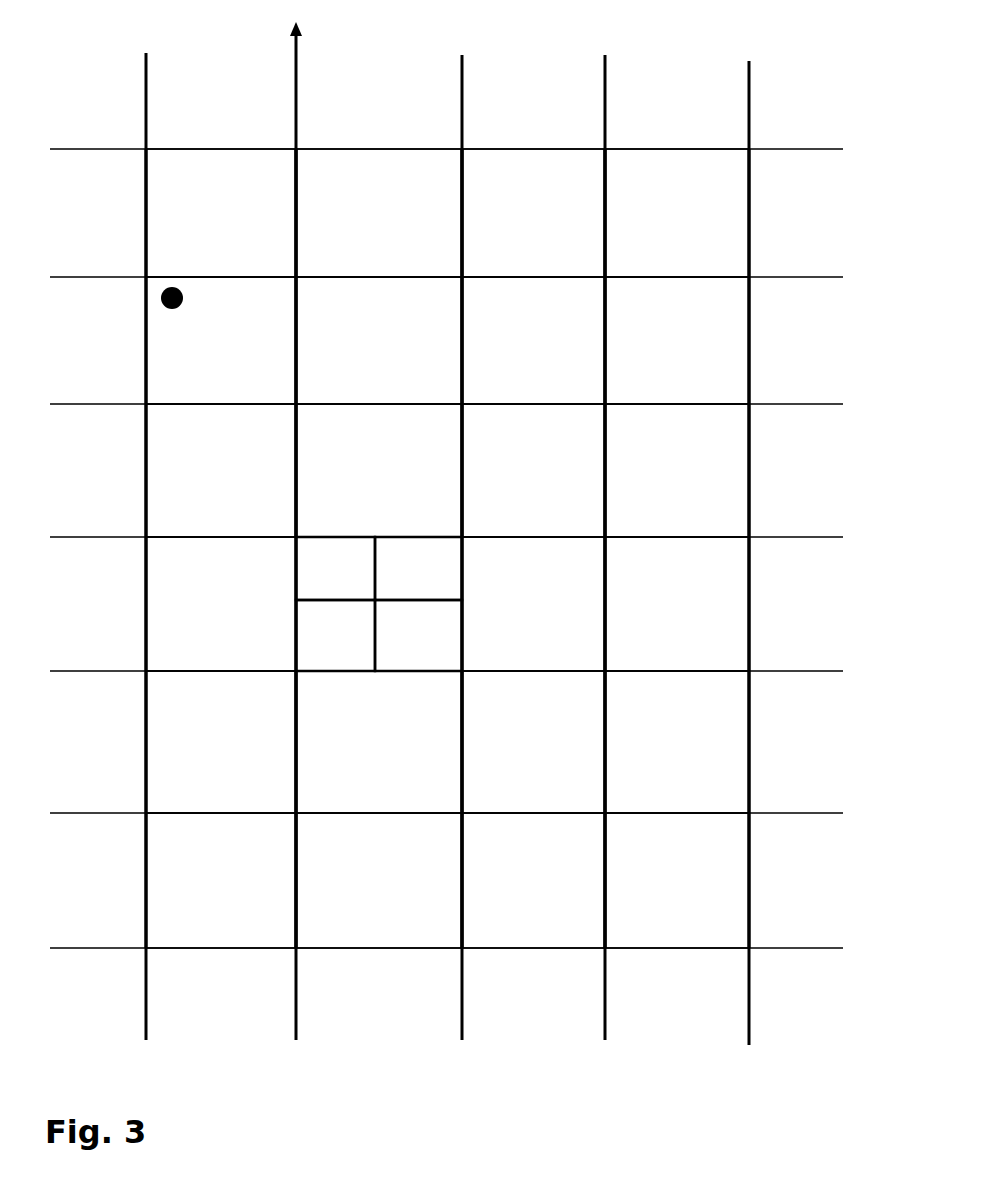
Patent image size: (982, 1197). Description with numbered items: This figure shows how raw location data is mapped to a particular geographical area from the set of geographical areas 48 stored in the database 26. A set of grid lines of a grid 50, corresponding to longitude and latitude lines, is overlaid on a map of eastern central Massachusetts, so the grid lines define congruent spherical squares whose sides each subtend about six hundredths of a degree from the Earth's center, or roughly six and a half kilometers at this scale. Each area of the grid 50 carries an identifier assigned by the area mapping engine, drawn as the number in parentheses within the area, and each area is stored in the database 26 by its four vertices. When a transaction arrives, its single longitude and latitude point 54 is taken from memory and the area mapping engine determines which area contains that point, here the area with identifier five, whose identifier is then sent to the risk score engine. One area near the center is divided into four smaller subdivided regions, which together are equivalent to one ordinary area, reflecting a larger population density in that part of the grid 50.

The database 26 is at (86, 54).
The set of geographical areas 48 is at (873, 592).
The grid 50 is at (757, 64).
The single longitude and latitude point 54 is at (150, 291).